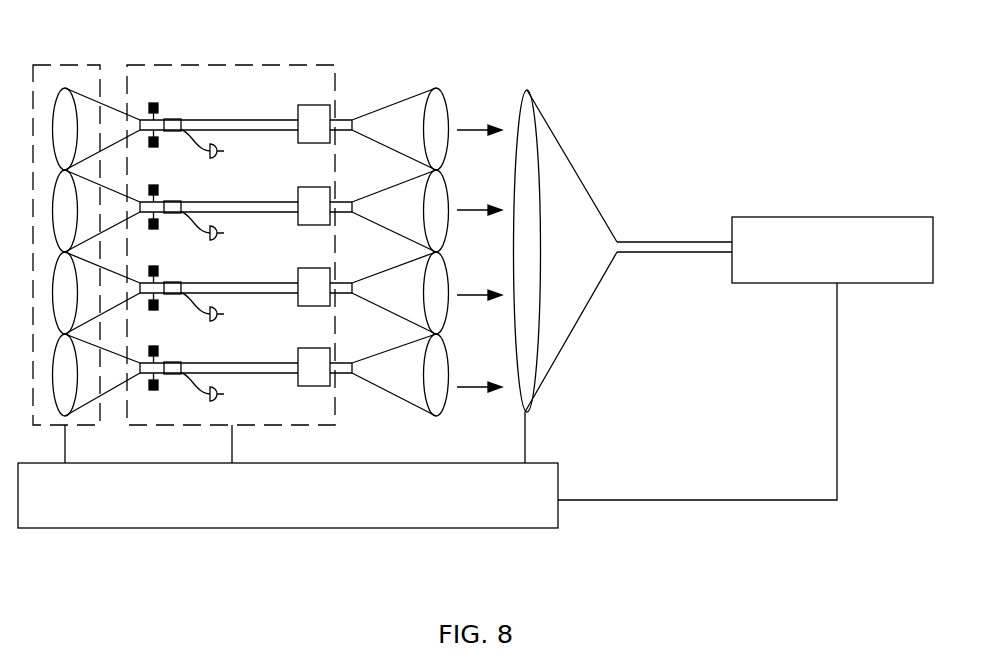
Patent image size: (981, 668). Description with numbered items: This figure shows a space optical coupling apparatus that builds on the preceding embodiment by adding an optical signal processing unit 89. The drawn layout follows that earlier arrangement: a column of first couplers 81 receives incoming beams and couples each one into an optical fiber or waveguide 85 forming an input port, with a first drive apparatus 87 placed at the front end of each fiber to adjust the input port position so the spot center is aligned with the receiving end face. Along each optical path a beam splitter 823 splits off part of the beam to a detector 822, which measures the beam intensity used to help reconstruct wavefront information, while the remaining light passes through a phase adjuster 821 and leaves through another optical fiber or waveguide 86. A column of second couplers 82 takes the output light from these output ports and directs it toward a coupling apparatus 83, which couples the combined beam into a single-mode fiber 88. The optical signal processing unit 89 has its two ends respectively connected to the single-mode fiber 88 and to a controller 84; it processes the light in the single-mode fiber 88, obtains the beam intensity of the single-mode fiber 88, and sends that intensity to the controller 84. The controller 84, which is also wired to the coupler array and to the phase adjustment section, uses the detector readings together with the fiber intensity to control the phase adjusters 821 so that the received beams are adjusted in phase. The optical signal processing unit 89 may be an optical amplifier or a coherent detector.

The first lens array 81 is at (68, 88).
The second lens array 82 is at (440, 90).
The converging lens 83 is at (528, 90).
The controller 84 is at (285, 528).
The optical fiber 85 is at (243, 378).
The output optical fiber 86 is at (345, 375).
The electrode 87 is at (160, 147).
The single-mode fiber 88 is at (663, 240).
The optical signal processing unit 89 is at (827, 217).
The optical modulator 821 is at (322, 103).
The photodetector 822 is at (219, 155).
The optical coupler 823 is at (172, 118).